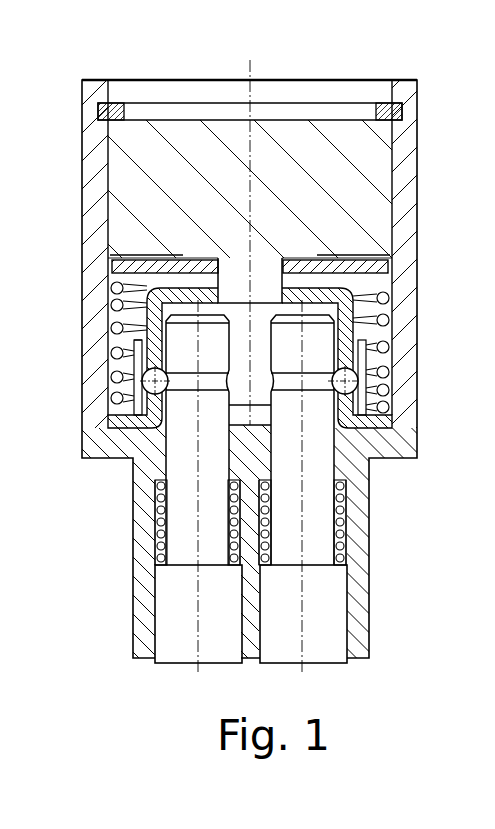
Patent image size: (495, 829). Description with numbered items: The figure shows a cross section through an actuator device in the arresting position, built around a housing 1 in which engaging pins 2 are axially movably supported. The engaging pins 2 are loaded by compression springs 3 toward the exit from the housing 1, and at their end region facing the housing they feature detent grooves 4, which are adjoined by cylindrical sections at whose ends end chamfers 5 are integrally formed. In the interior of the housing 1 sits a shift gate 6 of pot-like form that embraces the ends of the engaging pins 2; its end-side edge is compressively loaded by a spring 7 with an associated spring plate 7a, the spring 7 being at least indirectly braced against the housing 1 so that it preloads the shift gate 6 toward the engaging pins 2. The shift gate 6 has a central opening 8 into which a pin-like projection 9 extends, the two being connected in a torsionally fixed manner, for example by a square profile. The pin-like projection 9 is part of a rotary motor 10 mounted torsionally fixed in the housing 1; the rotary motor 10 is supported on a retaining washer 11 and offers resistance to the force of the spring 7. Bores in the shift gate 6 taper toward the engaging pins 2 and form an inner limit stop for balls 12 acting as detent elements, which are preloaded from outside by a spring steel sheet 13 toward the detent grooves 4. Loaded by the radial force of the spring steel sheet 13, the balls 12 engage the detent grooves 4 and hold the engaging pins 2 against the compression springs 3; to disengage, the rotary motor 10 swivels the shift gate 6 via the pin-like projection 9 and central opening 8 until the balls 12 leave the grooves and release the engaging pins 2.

The housing 1 is at (358, 493).
The engaging pins 2 is at (208, 640).
The compression springs 3 is at (157, 548).
The detent grooves 4 is at (210, 378).
The end chamfers 5 is at (270, 302).
The shift gate 6 is at (105, 352).
The spring 7 is at (135, 345).
The spring plate 7a is at (110, 256).
The central opening 8 is at (263, 284).
The pin-like projection 9 is at (280, 304).
The rotary motor 10 is at (360, 158).
The retaining washer 11 is at (387, 104).
The balls 12 is at (83, 432).
The spring steel sheet 13 is at (356, 368).